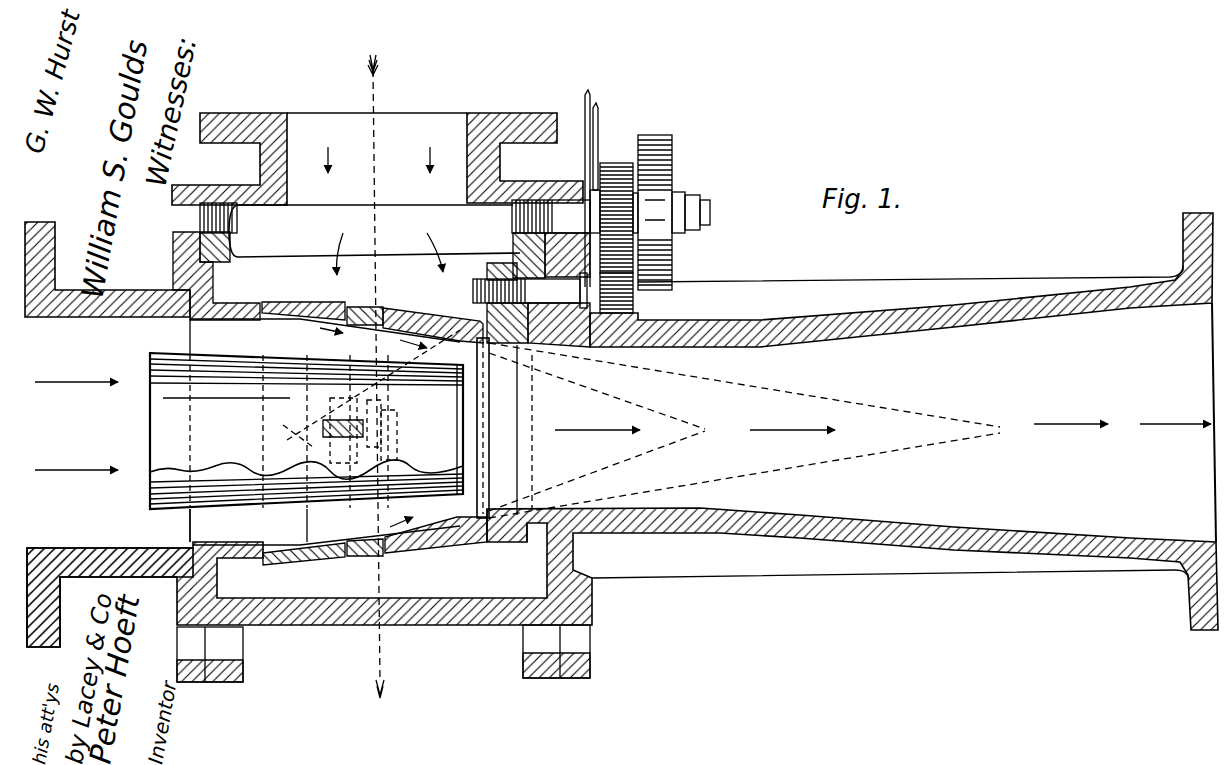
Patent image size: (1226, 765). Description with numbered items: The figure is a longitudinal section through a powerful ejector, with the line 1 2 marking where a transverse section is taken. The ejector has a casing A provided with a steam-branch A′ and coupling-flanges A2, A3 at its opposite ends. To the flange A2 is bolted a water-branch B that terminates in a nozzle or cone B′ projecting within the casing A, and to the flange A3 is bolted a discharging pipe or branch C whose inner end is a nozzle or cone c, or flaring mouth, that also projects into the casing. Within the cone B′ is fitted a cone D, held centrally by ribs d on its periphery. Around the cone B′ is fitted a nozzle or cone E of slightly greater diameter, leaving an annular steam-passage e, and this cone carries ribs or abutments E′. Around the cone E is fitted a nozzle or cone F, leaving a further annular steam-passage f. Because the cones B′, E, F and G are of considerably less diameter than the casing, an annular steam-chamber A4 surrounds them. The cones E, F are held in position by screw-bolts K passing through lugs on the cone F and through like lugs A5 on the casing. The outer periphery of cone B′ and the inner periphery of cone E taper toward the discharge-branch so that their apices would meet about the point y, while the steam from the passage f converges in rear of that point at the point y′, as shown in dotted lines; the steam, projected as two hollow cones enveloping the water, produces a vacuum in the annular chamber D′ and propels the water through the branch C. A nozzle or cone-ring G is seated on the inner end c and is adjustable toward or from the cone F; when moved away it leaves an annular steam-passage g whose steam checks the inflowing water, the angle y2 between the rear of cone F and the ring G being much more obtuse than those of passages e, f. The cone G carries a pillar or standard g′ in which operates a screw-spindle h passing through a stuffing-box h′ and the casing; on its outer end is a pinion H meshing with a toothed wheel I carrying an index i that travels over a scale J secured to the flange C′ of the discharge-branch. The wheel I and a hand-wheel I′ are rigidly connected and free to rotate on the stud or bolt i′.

The casing A is at (622, 430).
The steam-branch A′ is at (377, 161).
The coupling-flange A2 is at (225, 654).
The coupling-flange A3 is at (539, 651).
The annular steam-chamber A4 is at (403, 270).
The lugs A5 is at (343, 420).
The water-branch B is at (109, 434).
The nozzle or cone B′ is at (262, 305).
The discharging pipe or branch C is at (1122, 416).
The flange C′ is at (592, 612).
The cone D is at (306, 431).
The annular chamber D′ is at (215, 525).
The nozzle or cone E is at (305, 302).
The ribs or abutments E′ is at (355, 298).
The nozzle or cone F is at (427, 428).
The nozzle or cone G is at (485, 320).
The pinion H is at (626, 297).
The toothed wheel I is at (614, 207).
The hand-wheel I′ is at (664, 212).
The scale J is at (585, 150).
The screw-bolts K is at (390, 432).
The adjusting screw a is at (551, 216).
The nozzle or cone c is at (504, 428).
The ribs d is at (286, 335).
The annular steam-passage e is at (280, 557).
The annular steam-passage f is at (366, 553).
The annular steam-passage g is at (462, 338).
The pillar or standard g′ is at (490, 266).
The screw-spindle h is at (530, 290).
The stuffing-box h′ is at (533, 263).
The index i is at (600, 145).
The stud or short shaft i′ is at (698, 212).
The point y is at (744, 430).
The point y′ is at (597, 432).
The angle y2 is at (371, 392).
The section line 1 is at (374, 354).
The section line 2 is at (384, 704).